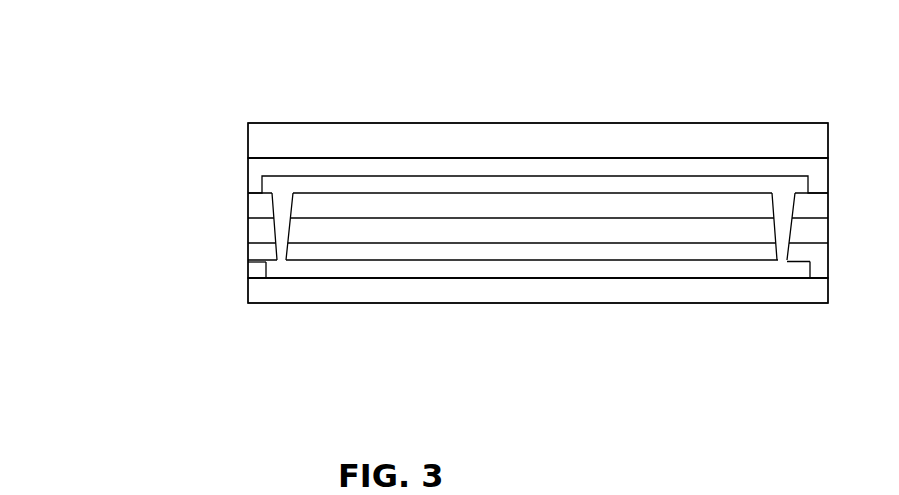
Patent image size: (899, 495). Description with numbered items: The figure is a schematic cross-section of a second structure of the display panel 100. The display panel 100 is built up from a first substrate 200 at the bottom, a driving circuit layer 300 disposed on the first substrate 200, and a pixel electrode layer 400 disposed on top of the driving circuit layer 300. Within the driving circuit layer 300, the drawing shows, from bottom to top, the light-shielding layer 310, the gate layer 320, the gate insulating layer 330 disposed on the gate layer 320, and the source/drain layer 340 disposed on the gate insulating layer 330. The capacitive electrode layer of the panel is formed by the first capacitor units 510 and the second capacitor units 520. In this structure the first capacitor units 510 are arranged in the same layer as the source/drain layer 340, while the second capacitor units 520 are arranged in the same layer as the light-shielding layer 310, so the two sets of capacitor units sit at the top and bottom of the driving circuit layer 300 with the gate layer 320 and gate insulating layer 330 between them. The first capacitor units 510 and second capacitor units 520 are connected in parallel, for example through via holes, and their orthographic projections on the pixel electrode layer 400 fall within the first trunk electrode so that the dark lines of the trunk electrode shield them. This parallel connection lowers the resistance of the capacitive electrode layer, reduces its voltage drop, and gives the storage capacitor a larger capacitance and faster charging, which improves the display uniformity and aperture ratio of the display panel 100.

The display panel 100 is at (160, 66).
The first substrate 200 is at (247, 295).
The driving circuit layer 300 is at (122, 147).
The light-shielding layer 310 is at (256, 262).
The gate layer 320 is at (247, 238).
The gate insulating layer 330 is at (247, 210).
The source/drain layer 340 is at (247, 167).
The pixel electrode layer 400 is at (247, 137).
The first capacitor units 510 is at (262, 192).
The second capacitor units 520 is at (266, 275).